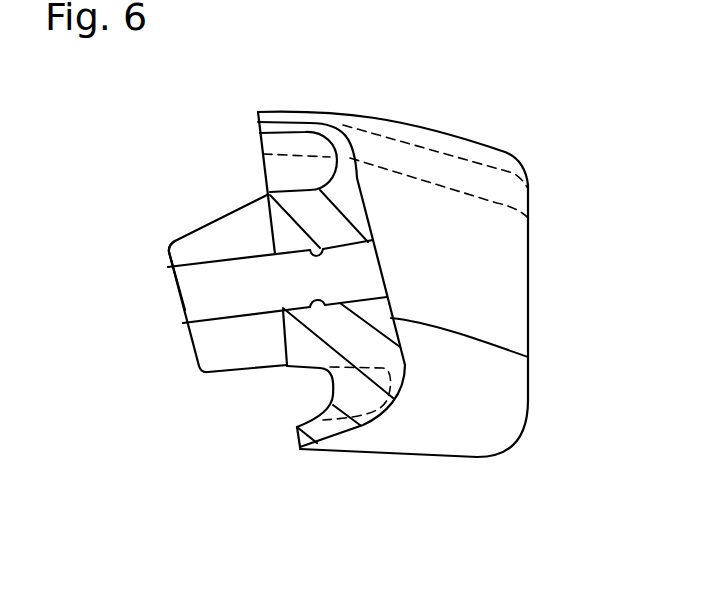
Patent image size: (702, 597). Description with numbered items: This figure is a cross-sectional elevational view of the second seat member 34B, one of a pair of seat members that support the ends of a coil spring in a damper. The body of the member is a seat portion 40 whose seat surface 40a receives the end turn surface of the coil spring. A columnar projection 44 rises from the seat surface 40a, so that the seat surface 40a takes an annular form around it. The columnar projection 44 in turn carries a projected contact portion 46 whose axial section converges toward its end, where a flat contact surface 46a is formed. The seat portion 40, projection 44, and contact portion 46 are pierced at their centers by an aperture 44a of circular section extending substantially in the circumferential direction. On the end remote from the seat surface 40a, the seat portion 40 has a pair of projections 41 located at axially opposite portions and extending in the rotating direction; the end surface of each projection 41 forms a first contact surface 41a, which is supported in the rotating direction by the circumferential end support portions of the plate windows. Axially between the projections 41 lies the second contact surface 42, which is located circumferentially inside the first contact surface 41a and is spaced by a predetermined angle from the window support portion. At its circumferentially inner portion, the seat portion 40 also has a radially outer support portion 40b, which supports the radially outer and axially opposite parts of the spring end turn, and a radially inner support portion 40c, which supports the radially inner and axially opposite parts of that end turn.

The second seat member 34B is at (413, 90).
The seat portion 40 is at (350, 207).
The seat surface 40a is at (327, 151).
The radially outer support portion 40b is at (283, 124).
The radially inner support portion 40c is at (318, 432).
The projection 41 is at (482, 300).
The first contact surface 41a is at (530, 253).
The second contact surface 42 is at (530, 357).
The columnar projection 44 is at (280, 231).
The aperture 44a is at (320, 306).
The contact portion 46 is at (186, 235).
The flat contact surface 46a is at (165, 248).